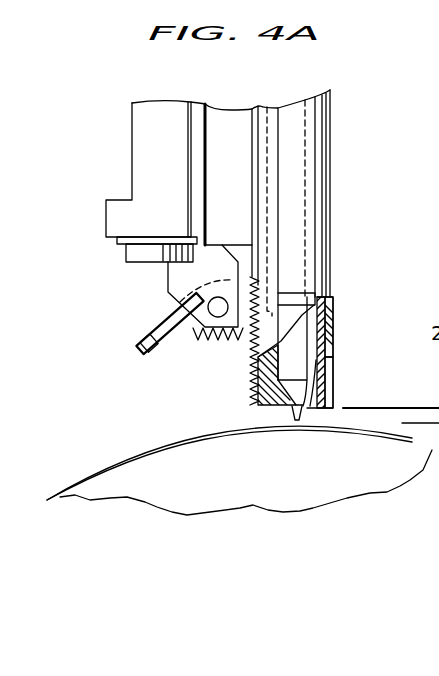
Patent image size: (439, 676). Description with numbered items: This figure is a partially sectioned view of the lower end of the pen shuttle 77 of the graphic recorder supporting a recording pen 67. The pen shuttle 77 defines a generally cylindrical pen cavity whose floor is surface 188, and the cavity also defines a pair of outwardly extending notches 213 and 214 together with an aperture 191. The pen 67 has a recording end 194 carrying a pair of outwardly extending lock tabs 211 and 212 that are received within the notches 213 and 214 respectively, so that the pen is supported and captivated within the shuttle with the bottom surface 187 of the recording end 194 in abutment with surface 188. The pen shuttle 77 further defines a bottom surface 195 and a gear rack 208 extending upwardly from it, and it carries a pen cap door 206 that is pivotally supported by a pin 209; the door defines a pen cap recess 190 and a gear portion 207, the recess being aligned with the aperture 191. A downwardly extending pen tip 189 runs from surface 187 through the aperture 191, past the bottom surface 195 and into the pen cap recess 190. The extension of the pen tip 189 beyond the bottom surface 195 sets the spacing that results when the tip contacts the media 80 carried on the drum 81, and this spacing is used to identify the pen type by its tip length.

The recording pen 67 is at (317, 200).
The pen shuttle 77 is at (333, 293).
The media 80 is at (90, 480).
The drum 81 is at (183, 478).
The bottom surface of recording end 187 is at (280, 405).
The surface of pen cavity 188 is at (290, 406).
The pen tip 189 is at (298, 408).
The pen cap recess 190 is at (158, 353).
The aperture 191 is at (329, 393).
The recording end 194 is at (318, 371).
The bottom surface 195 is at (277, 407).
The pen cap door 206 is at (145, 341).
The gear portion 207 is at (220, 341).
The gear rack 208 is at (255, 377).
The pin 209 is at (208, 307).
The lock tab 211 is at (332, 308).
The lock tab 212 is at (333, 302).
The notch 213 is at (333, 327).
The notch 214 is at (273, 302).